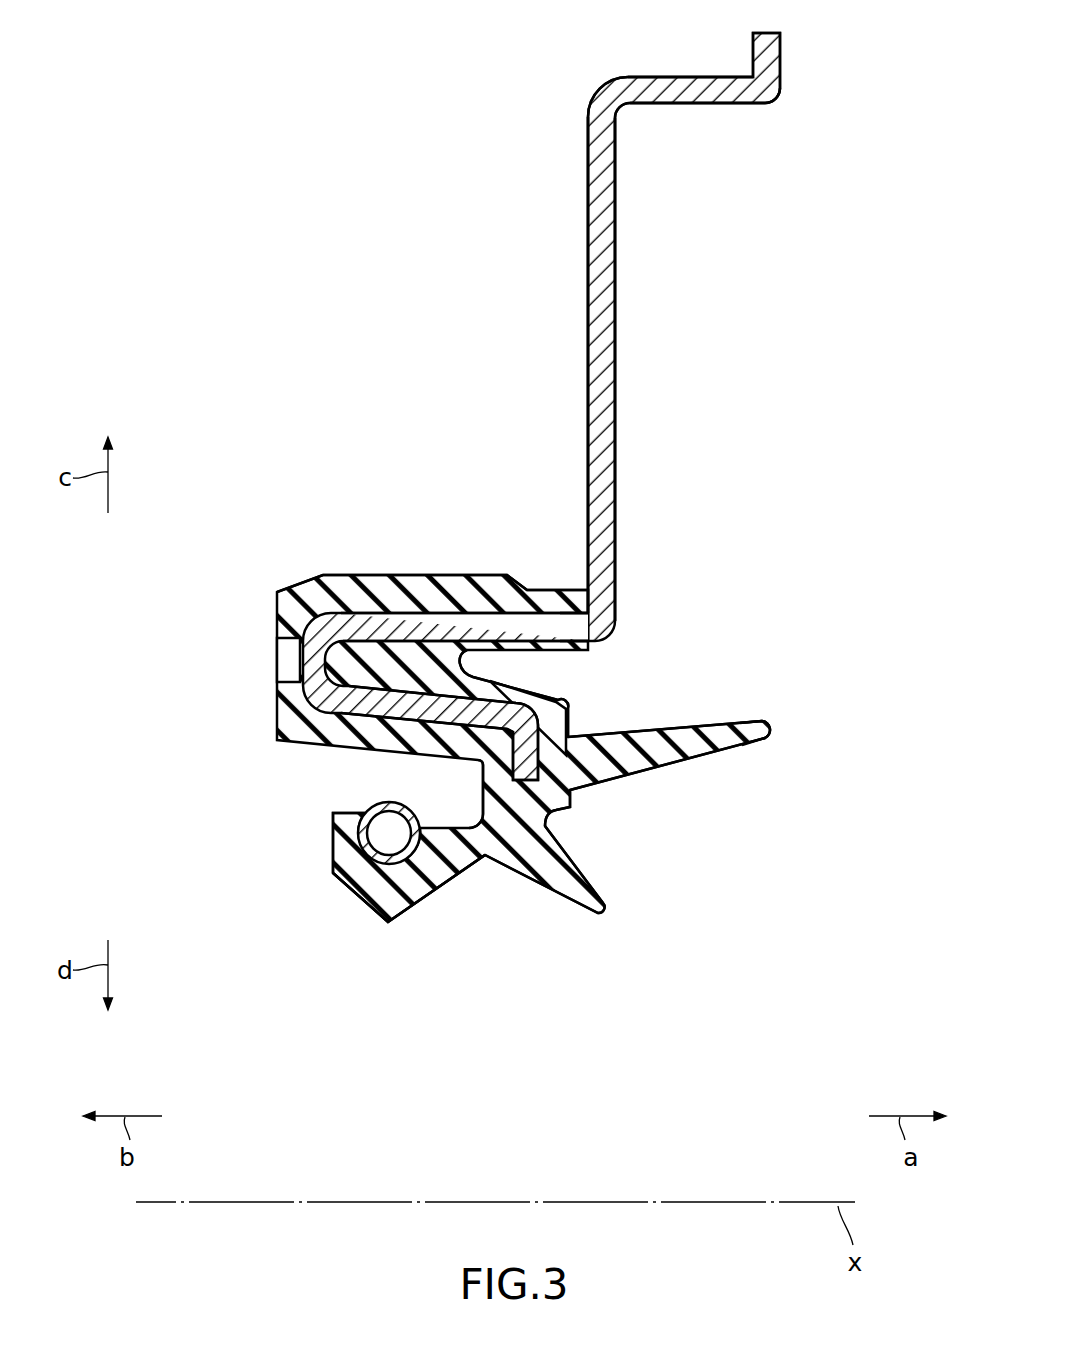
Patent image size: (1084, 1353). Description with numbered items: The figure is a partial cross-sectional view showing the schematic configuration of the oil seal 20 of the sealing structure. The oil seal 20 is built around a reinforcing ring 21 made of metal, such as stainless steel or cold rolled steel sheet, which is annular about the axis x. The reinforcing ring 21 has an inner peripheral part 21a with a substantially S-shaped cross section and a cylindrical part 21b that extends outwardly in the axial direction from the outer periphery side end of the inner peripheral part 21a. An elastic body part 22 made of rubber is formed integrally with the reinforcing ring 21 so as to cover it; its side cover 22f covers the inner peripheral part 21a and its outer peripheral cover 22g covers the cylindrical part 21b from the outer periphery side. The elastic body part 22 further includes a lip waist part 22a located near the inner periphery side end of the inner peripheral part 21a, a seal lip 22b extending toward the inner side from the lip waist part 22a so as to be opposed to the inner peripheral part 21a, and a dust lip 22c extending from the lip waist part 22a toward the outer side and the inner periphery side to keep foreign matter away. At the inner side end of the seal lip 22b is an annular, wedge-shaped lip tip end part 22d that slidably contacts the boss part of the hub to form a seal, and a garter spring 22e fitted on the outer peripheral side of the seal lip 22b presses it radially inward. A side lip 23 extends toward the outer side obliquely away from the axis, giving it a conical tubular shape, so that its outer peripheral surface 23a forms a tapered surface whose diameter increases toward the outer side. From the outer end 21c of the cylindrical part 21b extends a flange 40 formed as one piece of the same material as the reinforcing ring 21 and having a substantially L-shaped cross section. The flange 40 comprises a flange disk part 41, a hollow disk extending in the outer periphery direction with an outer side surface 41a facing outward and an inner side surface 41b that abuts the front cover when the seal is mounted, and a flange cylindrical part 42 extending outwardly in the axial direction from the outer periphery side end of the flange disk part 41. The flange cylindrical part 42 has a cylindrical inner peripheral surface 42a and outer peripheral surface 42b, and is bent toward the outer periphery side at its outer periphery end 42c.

The oil seal 20 is at (418, 66).
The reinforcing ring 21 is at (395, 430).
The inner peripheral part 21a is at (405, 688).
The cylindrical part 21b is at (430, 610).
The outer end 21c is at (582, 620).
The elastic body part 22 is at (274, 852).
The lip waist part 22a is at (526, 804).
The seal lip 22b is at (348, 926).
The dust lip 22c is at (533, 868).
The lip tip end part 22d is at (390, 917).
The garter spring 22e is at (384, 810).
The side cover 22f is at (287, 712).
The outer peripheral cover 22g is at (322, 577).
The side lip 23 is at (712, 779).
The outer peripheral surface 23a is at (706, 724).
The flange 40 is at (838, 318).
The flange disk part 41 is at (630, 386).
The outer side surface 41a is at (616, 310).
The inner side surface 41b is at (588, 302).
The flange cylindrical part 42 is at (718, 122).
The inner peripheral surface 42a is at (655, 105).
The outer peripheral surface 42b is at (725, 78).
The outer periphery end 42c is at (776, 98).